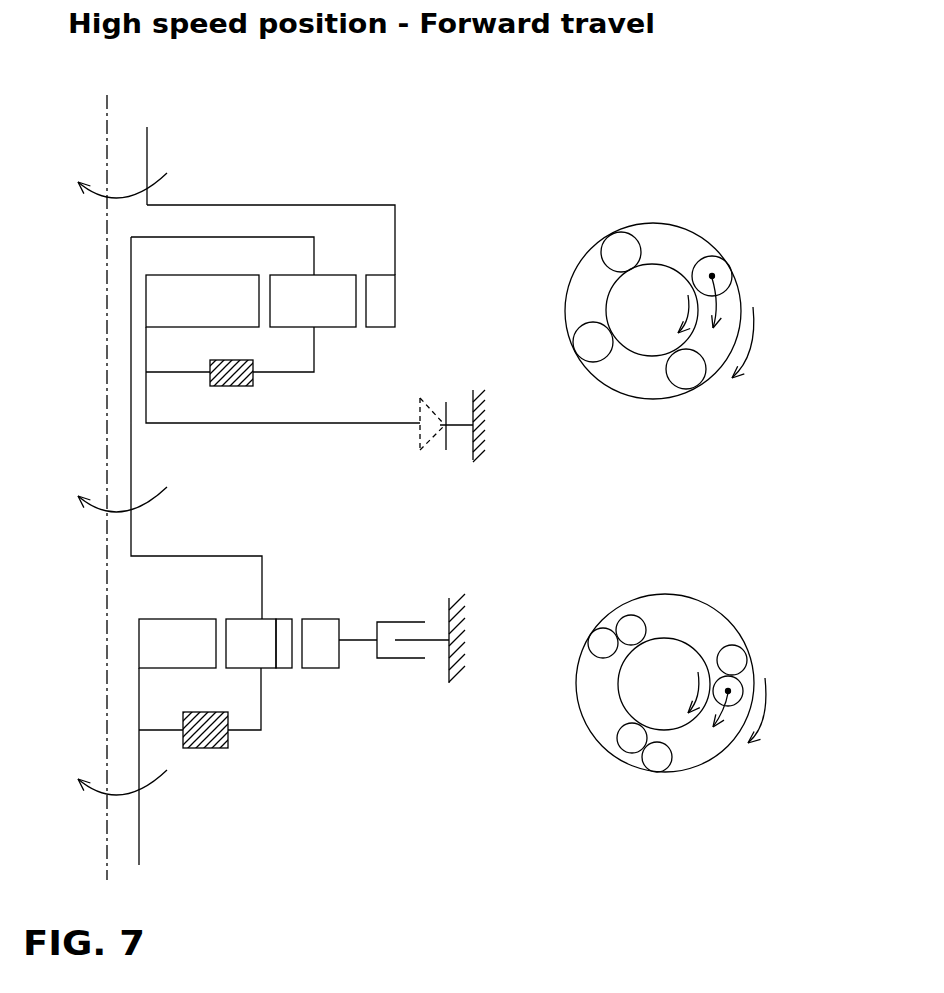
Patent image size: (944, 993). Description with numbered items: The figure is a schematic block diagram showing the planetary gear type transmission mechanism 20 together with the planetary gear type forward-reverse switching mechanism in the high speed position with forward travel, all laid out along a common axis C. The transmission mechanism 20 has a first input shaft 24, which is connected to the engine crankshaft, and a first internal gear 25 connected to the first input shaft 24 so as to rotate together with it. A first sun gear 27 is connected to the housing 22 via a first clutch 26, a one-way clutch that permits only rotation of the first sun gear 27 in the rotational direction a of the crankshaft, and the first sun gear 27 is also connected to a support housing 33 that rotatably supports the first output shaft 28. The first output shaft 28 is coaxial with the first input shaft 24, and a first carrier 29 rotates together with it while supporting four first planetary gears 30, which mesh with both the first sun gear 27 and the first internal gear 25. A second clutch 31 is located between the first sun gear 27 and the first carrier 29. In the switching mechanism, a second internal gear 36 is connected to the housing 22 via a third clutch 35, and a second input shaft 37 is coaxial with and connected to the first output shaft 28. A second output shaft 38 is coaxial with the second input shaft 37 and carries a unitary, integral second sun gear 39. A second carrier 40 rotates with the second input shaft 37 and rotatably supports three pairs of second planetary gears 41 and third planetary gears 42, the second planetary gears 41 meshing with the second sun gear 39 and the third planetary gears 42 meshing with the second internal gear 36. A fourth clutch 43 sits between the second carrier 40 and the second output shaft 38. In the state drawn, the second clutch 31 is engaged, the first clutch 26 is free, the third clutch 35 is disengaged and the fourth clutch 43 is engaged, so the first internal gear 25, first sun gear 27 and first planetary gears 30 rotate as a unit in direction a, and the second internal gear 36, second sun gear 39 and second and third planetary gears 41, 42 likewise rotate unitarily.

The planetary gear type transmission mechanism 20 is at (318, 137).
The housing 22 is at (450, 675).
The first input shaft 24 is at (148, 145).
The first internal gear 25 is at (396, 300).
The first clutch 26 is at (430, 440).
The first sun gear 27 is at (198, 274).
The first output shaft 28 is at (132, 455).
The first carrier 29 is at (315, 346).
The first planetary gears 30 is at (333, 275).
The second clutch 31 is at (240, 381).
The support housing 33 is at (470, 455).
The third clutch 35 is at (398, 660).
The second internal gear 36 is at (318, 618).
The second input shaft 37 is at (132, 537).
The second output shaft 38 is at (140, 815).
The second sun gear 39 is at (168, 618).
The second carrier 40 is at (262, 695).
The second planetary gears 41 is at (245, 618).
The third planetary gears 42 is at (282, 618).
The fourth clutch 43 is at (215, 750).
The rotation axis C is at (112, 110).
The rotational direction a is at (134, 196).